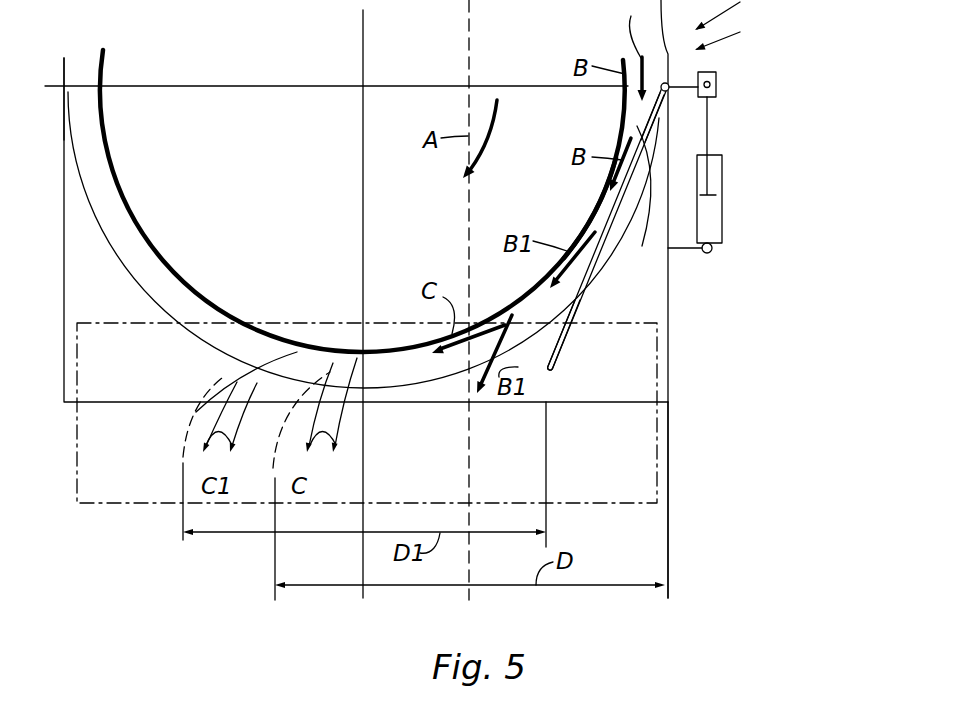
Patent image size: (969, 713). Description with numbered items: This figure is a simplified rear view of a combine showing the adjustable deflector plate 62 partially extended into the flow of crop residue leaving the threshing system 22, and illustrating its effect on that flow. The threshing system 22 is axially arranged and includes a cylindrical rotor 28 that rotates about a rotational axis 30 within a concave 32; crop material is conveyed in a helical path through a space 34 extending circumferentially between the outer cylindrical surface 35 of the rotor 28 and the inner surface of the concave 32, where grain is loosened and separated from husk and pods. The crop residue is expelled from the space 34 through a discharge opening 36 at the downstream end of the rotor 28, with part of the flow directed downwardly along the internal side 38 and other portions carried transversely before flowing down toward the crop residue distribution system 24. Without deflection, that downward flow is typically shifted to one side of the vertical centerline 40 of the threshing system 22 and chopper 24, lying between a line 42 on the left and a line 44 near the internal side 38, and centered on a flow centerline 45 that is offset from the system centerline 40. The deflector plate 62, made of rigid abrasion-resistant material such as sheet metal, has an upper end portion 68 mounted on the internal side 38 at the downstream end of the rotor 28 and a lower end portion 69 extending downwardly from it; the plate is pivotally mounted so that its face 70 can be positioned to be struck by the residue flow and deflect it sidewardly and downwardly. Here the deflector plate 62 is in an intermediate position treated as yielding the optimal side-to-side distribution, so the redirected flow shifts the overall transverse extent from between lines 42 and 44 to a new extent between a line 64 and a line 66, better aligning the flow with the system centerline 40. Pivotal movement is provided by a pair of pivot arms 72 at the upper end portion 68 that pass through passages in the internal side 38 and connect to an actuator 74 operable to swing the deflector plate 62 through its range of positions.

The threshing system 22 is at (730, 26).
The crop residue distribution system 24 is at (667, 478).
The cylindrical rotor 28 is at (632, 29).
The rotational axis 30 is at (365, 85).
The concave 32 is at (65, 68).
The space 34 is at (88, 122).
The outer cylindrical surface 35 is at (110, 178).
The discharge opening 36 is at (636, 202).
The internal side 38 is at (668, 286).
The vertical centerline 40 is at (363, 32).
The line 42 is at (275, 552).
The line 44 is at (666, 545).
The flow centerline 45 is at (468, 597).
The adjustable deflector plate 62 is at (601, 215).
The line 64 is at (183, 463).
The line 66 is at (546, 468).
The upper end portion 68 is at (637, 117).
The lower end portion 69 is at (553, 362).
The face 70 is at (568, 309).
The pivot arms 72 is at (696, 98).
The actuator 74 is at (722, 182).